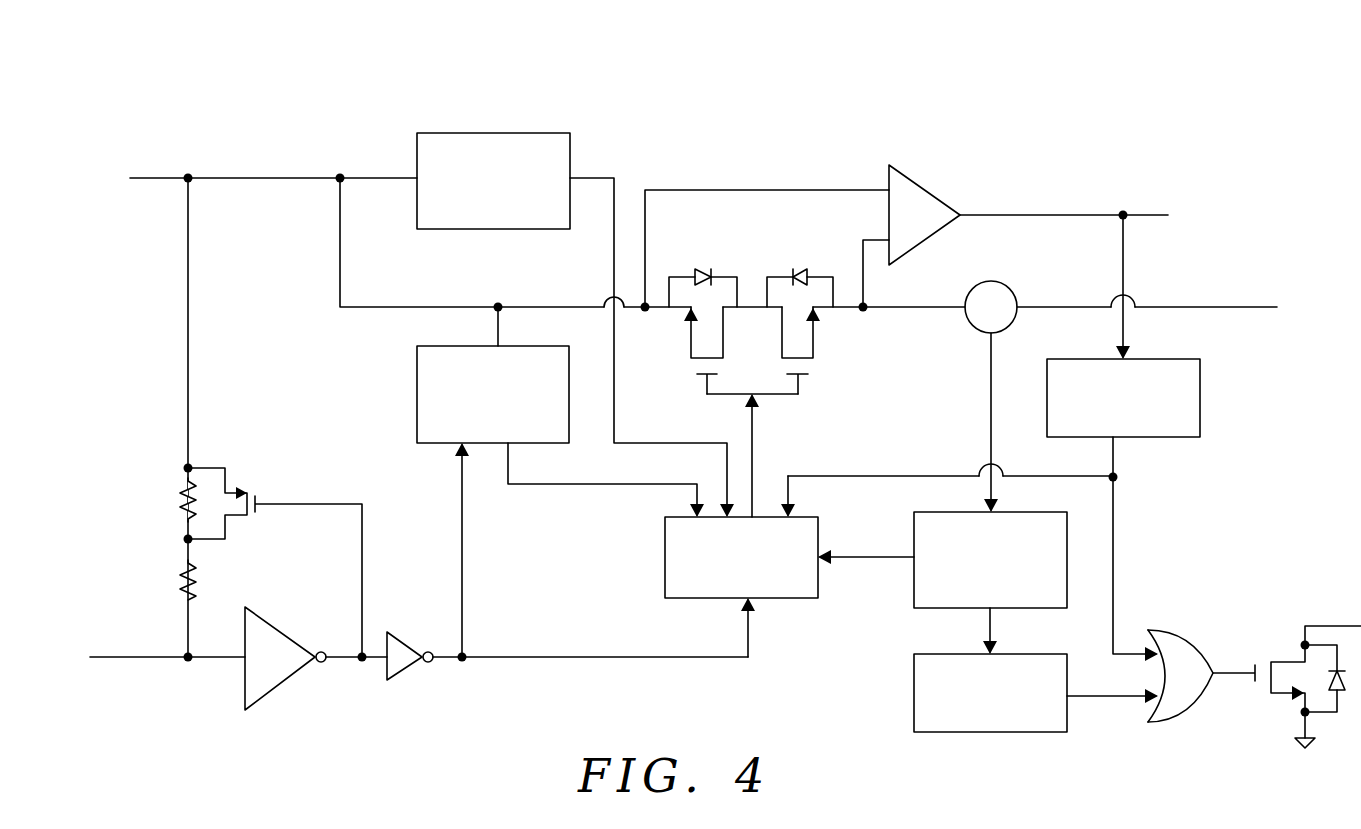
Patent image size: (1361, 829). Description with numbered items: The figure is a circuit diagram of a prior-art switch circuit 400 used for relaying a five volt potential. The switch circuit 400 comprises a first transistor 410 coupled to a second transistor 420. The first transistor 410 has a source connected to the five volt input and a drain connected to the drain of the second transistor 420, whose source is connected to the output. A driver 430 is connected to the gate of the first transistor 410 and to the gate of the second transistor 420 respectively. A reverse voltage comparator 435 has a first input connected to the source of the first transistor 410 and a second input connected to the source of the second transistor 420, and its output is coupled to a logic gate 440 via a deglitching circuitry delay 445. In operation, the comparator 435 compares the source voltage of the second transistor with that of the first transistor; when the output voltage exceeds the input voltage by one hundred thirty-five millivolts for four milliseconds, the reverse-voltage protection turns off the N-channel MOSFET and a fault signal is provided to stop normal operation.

The switch circuit 400 is at (257, 111).
The first transistor 410 is at (669, 325).
The second transistor 420 is at (831, 325).
The driver 430 is at (665, 565).
The reverse voltage comparator 435 is at (926, 191).
The logic gate 440 is at (1167, 633).
The deglitching circuitry delay 445 is at (1170, 359).